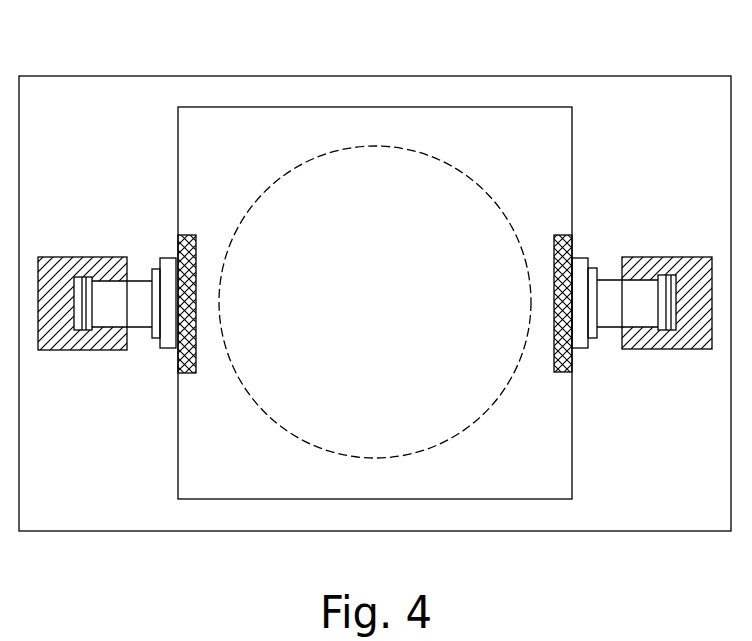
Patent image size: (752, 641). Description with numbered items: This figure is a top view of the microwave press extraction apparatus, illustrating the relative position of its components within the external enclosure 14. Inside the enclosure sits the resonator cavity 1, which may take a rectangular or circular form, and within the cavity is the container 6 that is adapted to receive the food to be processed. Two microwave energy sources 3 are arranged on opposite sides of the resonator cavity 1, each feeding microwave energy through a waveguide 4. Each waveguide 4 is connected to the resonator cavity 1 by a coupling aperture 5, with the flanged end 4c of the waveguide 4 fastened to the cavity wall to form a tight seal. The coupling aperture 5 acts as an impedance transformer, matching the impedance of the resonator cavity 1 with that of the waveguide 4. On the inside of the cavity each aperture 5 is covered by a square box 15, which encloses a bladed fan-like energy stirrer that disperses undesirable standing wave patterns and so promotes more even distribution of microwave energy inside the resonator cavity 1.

The external enclosure 14 is at (84, 92).
The resonator cavity 1 is at (572, 168).
The container 6 is at (481, 188).
The microwave energy source 3 is at (66, 259).
The waveguide 4 is at (135, 313).
The flanged end 4c is at (153, 268).
The coupling aperture 5 is at (167, 259).
The square box 15 is at (189, 360).